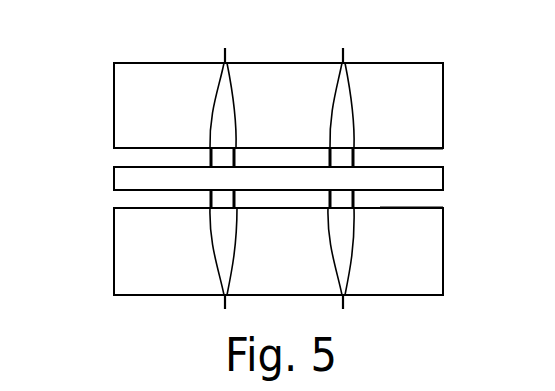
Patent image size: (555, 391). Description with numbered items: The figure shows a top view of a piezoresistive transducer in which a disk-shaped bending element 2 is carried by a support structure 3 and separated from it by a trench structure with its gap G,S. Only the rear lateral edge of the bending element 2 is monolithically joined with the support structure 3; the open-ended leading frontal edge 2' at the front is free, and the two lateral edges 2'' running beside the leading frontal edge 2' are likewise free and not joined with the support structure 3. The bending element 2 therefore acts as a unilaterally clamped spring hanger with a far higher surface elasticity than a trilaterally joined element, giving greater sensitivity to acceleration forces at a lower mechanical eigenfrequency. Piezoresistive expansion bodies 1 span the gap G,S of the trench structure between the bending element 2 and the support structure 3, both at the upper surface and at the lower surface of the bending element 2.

The piezoresistive expansion bodies 1 is at (282, 180).
The bending element 2 is at (278, 108).
The leading frontal edge 2' is at (115, 153).
The lateral edges 2'' is at (276, 195).
The support structure 3 is at (131, 100).
The trench structure and gap G,S is at (402, 155).